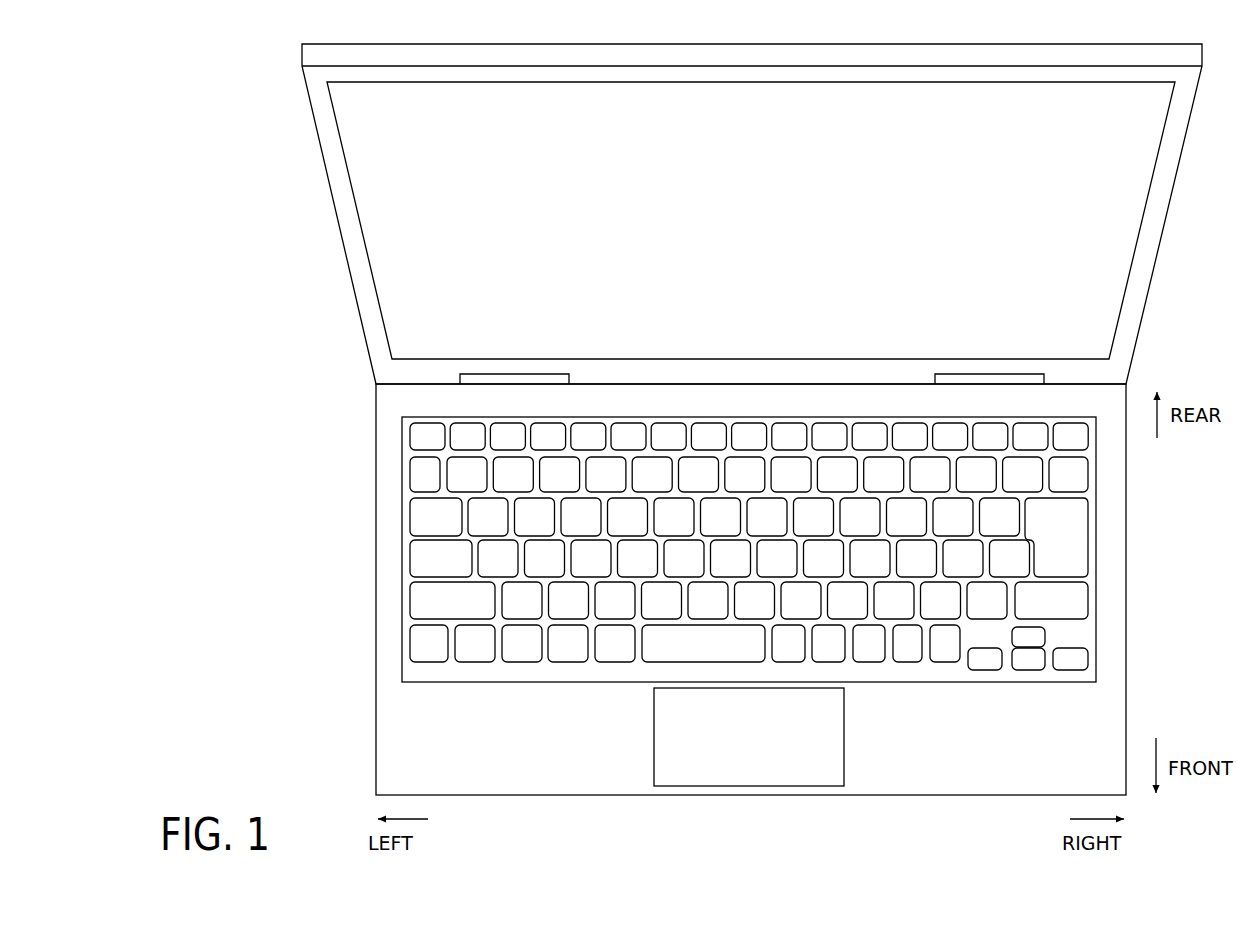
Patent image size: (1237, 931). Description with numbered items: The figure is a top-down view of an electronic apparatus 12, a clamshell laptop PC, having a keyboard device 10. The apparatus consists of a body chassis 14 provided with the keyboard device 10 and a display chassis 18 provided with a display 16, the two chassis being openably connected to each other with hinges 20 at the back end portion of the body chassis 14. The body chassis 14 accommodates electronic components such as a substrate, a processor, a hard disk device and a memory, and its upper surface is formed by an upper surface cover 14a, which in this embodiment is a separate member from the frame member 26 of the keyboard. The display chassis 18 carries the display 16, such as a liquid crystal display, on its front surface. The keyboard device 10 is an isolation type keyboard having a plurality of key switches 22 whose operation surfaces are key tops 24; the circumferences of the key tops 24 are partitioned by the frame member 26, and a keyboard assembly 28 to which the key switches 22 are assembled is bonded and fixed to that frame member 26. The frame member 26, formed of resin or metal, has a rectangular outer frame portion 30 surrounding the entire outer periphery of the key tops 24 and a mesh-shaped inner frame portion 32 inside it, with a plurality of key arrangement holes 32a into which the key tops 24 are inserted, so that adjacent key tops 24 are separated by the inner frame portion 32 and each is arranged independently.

The keyboard device 10 is at (397, 548).
The electronic apparatus 12 is at (260, 61).
The body chassis 14 is at (374, 674).
The upper surface cover 14a is at (403, 773).
The display 16 is at (378, 250).
The display chassis 18 is at (326, 172).
The hinges 20 is at (512, 380).
The key switches 22 is at (769, 577).
The key tops 24 is at (793, 470).
The frame member 26 is at (531, 669).
The keyboard assembly 28 is at (805, 605).
The outer frame portion 30 is at (403, 474).
The inner frame portion 32 is at (497, 602).
The key arrangement holes 32a is at (637, 473).